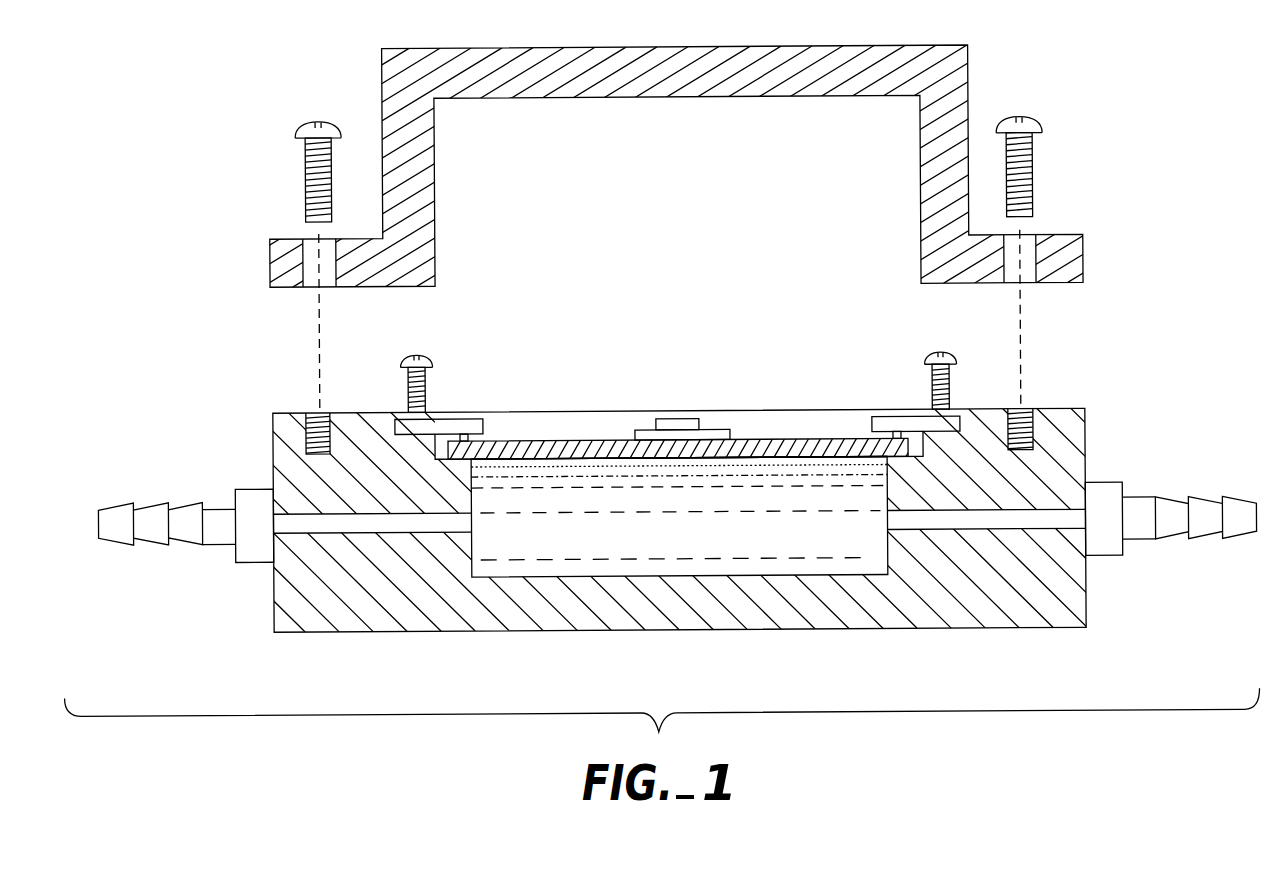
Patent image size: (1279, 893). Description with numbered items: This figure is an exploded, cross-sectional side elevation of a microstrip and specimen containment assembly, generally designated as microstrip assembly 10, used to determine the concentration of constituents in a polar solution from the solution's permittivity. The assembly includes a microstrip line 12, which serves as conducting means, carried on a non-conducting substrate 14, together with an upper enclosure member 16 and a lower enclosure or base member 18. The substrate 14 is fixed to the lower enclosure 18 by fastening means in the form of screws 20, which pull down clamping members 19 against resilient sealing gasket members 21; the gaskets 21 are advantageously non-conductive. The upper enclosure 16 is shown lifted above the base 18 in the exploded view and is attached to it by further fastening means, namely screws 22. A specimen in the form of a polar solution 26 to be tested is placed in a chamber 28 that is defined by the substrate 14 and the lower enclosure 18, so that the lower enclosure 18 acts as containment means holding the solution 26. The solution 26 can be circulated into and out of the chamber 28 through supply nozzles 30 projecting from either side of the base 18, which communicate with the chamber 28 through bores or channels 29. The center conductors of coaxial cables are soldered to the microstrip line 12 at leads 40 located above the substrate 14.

The microstrip assembly 10 is at (639, 365).
The microstrip line 12 is at (725, 433).
The substrate 14 is at (723, 447).
The upper enclosure member 16 is at (562, 90).
The lower enclosure or base member 18 is at (773, 617).
The clamping members 19 is at (445, 422).
The screws 20 is at (430, 357).
The resilient sealing gasket members 21 is at (470, 438).
The screws 22 is at (305, 118).
The polar solution 26 is at (542, 560).
The chamber 28 is at (596, 555).
The bores or channels 29 is at (385, 519).
The supply nozzles 30 is at (152, 532).
The leads 40 is at (673, 419).